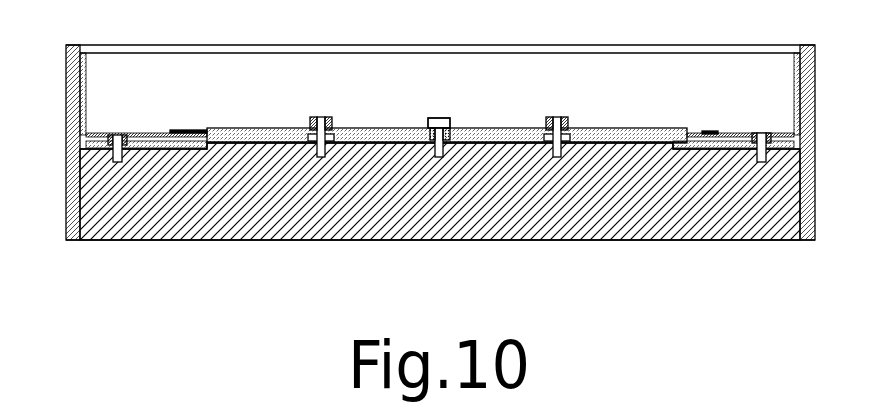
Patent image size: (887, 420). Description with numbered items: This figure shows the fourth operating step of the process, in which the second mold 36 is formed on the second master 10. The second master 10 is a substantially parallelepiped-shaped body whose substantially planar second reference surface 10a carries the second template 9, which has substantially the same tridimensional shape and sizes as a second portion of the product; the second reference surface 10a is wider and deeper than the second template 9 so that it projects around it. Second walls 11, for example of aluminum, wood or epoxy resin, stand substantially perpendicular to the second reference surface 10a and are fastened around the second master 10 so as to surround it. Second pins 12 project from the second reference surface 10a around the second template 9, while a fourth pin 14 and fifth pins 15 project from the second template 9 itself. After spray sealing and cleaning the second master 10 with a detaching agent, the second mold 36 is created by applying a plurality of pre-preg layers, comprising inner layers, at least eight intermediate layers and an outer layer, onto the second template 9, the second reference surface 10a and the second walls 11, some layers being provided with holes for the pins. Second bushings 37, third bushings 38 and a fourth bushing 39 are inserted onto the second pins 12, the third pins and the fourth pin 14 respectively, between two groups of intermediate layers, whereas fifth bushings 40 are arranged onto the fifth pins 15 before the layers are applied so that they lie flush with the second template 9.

The second template 9 is at (600, 136).
The second master 10 is at (482, 235).
The second reference surface 10a is at (100, 150).
The second walls 11 is at (73, 78).
The second pins 12 is at (121, 136).
The fourth pin 14 is at (437, 119).
The fifth pins 15 is at (318, 118).
The second mold 36 is at (238, 137).
The second bushings 37 is at (105, 137).
The third bushings 38 is at (180, 131).
The fourth bushing 39 is at (449, 131).
The fifth bushings 40 is at (328, 118).